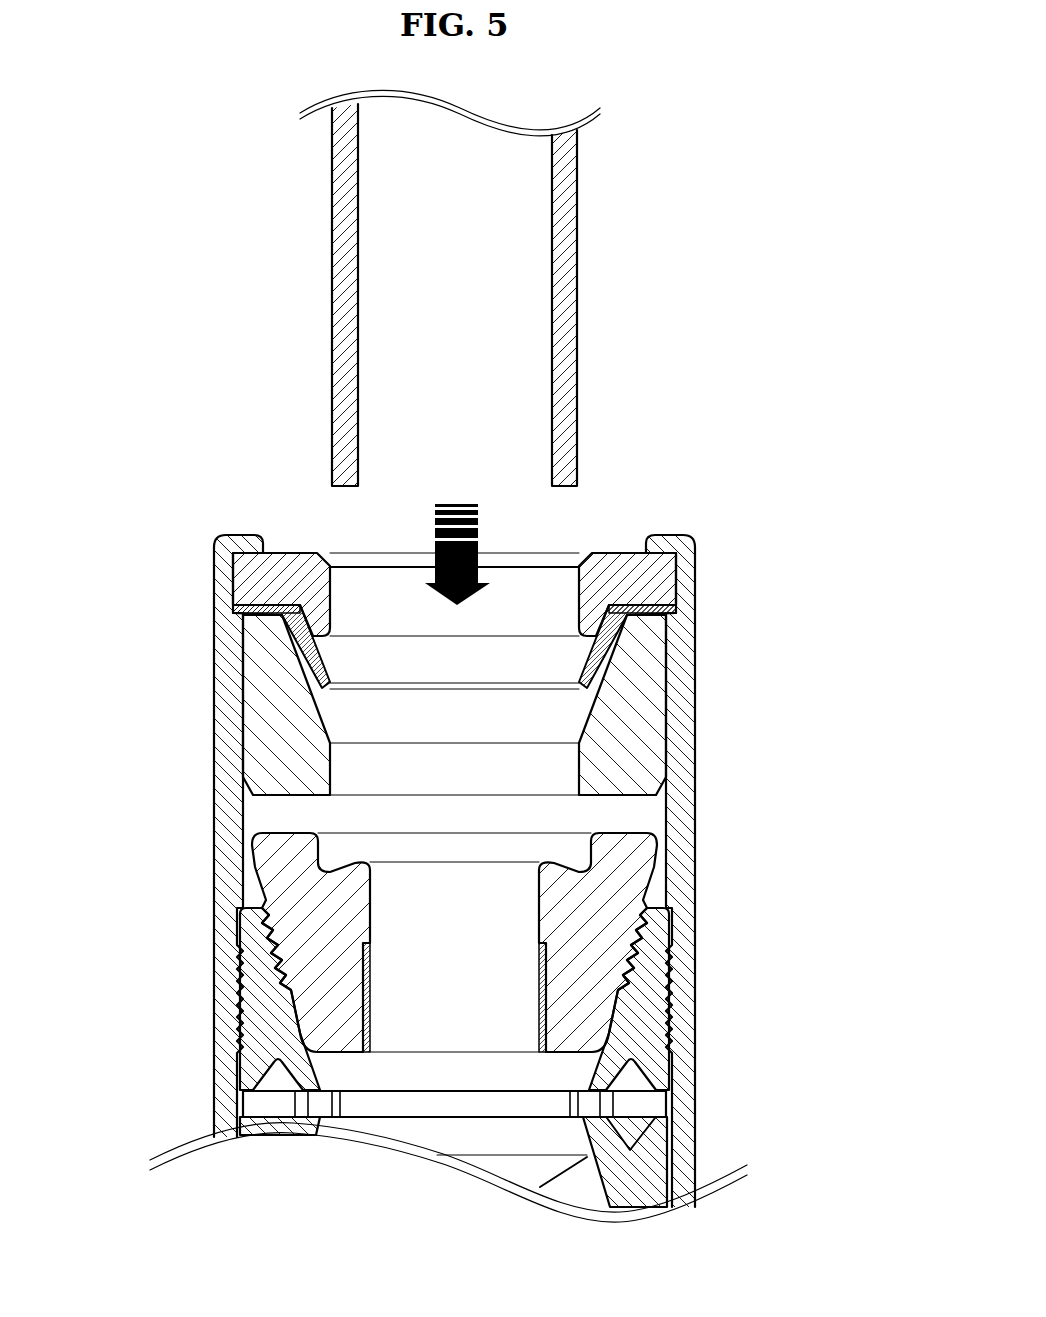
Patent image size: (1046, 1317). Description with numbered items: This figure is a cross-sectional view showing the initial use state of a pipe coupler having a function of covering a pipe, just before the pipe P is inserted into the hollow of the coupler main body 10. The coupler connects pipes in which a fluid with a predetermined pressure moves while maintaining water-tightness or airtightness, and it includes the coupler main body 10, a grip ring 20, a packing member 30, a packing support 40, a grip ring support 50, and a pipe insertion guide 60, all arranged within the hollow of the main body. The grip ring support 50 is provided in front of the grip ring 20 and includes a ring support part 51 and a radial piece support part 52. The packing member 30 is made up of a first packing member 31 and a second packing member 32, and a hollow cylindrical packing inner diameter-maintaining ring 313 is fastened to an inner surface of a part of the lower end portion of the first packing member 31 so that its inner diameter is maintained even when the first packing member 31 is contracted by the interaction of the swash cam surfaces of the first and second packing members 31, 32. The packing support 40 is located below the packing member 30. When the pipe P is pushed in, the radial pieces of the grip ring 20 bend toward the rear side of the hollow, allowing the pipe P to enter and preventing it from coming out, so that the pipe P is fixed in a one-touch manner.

The pipe P is at (570, 255).
The coupler main body 10 is at (222, 777).
The grip ring 20 is at (597, 665).
The packing member 30 is at (778, 883).
The first packing member 31 is at (600, 912).
The packing inner diameter-maintaining ring 313 is at (545, 998).
The second packing member 32 is at (637, 1017).
The packing support 40 is at (270, 1103).
The grip ring support 50 is at (116, 578).
The ring support part 51 is at (272, 581).
The radial piece support part 52 is at (320, 628).
The pipe insertion guide 60 is at (272, 705).